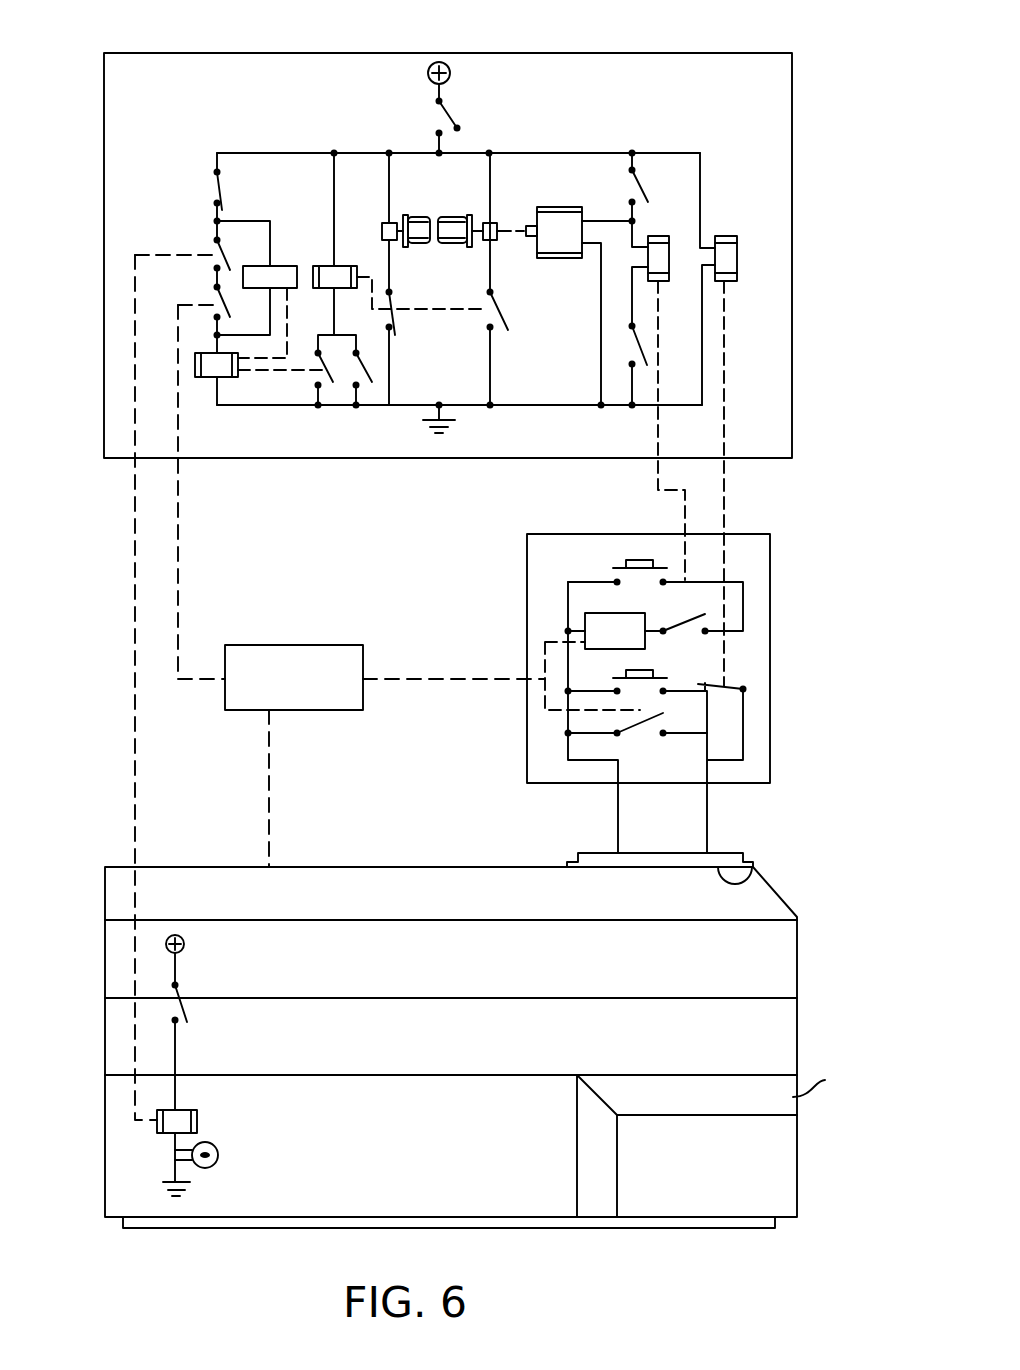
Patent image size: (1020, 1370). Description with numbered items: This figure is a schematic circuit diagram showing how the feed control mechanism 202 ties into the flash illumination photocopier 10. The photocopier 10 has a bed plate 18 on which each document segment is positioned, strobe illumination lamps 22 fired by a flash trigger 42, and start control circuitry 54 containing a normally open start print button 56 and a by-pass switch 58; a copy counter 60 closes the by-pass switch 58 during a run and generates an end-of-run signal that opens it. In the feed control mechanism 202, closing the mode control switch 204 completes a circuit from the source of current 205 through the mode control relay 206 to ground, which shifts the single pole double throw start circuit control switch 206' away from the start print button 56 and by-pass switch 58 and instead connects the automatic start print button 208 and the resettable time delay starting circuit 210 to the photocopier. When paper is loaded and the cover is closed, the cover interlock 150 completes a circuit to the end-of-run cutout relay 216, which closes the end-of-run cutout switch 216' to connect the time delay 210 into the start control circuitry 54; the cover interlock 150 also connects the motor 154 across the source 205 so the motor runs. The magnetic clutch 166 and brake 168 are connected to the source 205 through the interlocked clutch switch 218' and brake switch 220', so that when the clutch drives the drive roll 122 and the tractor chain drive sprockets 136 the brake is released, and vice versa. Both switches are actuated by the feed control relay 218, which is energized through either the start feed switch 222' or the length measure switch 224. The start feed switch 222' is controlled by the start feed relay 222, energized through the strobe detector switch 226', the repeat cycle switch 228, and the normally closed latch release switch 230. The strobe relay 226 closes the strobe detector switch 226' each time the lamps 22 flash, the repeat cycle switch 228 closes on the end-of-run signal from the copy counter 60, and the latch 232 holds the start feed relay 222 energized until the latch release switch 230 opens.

The flash illumination photocopier 10 is at (813, 938).
The bed plate 18 is at (753, 877).
The strobe illumination lamps 22 is at (218, 1160).
The flash trigger 42 is at (184, 1005).
The start control circuitry 54 is at (527, 757).
The start print button 56 is at (646, 670).
The by-pass switch 58 is at (648, 714).
The copy counter 60 is at (340, 643).
The drive roll 122 is at (443, 215).
The tractor chain drive sprockets 136 is at (405, 215).
The cover interlock 150 is at (644, 196).
The motor 154 is at (552, 212).
The magnetic clutch 166 is at (493, 242).
The brake 168 is at (392, 242).
The feed control mechanism 202 is at (330, 27).
The mode control switch 204 is at (452, 114).
The source of current 205 is at (428, 73).
The mode control relay 206 is at (743, 419).
The start circuit control switch 206' is at (758, 669).
The automatic start print button 208 is at (628, 560).
The time delay starting circuit 210 is at (592, 612).
The end-of-run cutout relay 216 is at (661, 408).
The end-of-run cutout switch 216' is at (666, 610).
The feed control relay 218 is at (400, 253).
The clutch switch 218' is at (528, 279).
The brake switch 220' is at (424, 309).
The start feed relay 222 is at (260, 346).
The start feed switch 222' is at (312, 354).
The length measure switch 224 is at (372, 384).
The strobe relay 226 is at (211, 1143).
The strobe detector switch 226' is at (182, 239).
The repeat cycle switch 228 is at (218, 301).
The latch release switch 230 is at (221, 194).
The latch 232 is at (279, 266).